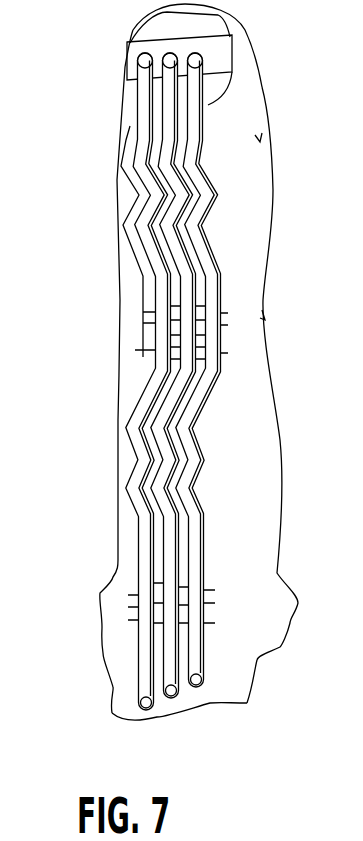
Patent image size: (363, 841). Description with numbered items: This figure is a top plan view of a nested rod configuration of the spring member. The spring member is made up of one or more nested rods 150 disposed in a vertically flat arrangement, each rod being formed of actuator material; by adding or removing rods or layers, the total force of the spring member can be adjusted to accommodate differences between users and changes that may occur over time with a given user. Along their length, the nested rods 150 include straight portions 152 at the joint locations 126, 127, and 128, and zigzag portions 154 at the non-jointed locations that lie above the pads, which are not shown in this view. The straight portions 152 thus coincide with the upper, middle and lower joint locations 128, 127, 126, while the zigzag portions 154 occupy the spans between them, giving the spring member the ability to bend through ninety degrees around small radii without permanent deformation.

The joint location 126 is at (130, 607).
The joint location 127 is at (145, 313).
The joint location 128 is at (130, 126).
The nested rods 150 is at (125, 87).
The straight portions 152 is at (198, 110).
The zigzag portions 154 is at (198, 459).